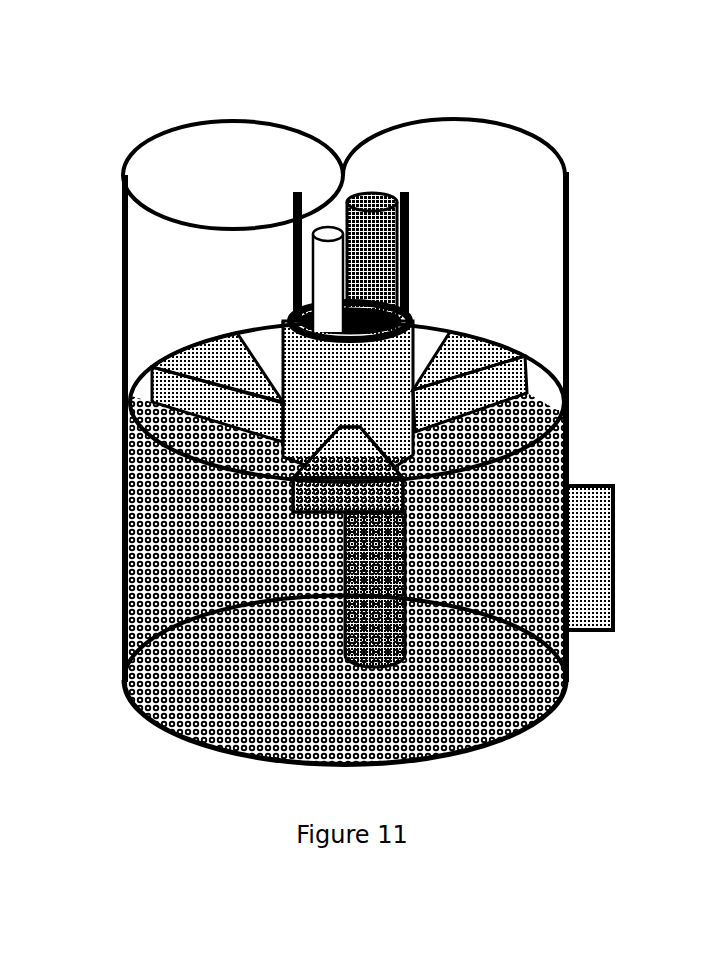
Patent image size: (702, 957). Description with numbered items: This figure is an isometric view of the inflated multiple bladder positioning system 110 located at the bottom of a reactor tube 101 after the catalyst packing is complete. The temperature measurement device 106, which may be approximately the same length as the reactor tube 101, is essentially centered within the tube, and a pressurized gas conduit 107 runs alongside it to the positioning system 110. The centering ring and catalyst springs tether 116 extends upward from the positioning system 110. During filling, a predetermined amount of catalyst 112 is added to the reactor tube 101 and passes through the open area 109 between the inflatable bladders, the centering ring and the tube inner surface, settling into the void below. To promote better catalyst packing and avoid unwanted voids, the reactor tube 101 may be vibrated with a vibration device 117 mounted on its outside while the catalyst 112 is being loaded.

The reactor tube 101 is at (108, 304).
The temperature measurement device 106 is at (385, 186).
The pressurized gas conduit 107 is at (329, 254).
The area between multiple inflatable bladders 109 is at (472, 432).
The multiple bladder positioning system 110 is at (237, 354).
The catalyst 112 is at (174, 540).
The centering ring and catalyst springs tether 116 is at (352, 246).
The vibration device 117 is at (609, 558).